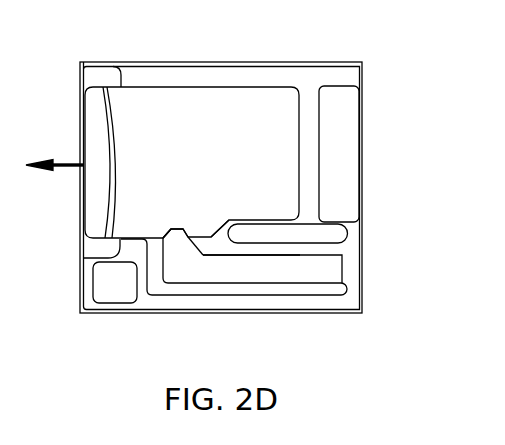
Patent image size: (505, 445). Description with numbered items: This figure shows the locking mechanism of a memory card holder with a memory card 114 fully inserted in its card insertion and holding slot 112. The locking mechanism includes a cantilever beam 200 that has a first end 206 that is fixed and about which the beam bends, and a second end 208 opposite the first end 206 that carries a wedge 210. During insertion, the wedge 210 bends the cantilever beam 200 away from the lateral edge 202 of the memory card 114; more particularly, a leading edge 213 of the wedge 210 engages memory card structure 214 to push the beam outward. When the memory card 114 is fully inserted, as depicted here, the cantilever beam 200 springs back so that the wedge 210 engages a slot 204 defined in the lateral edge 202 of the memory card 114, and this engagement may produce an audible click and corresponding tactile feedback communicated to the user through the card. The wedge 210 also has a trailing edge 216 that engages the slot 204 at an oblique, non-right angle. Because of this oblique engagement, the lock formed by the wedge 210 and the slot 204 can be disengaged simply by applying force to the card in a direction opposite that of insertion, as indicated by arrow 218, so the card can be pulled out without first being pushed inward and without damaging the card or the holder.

The card insertion and holding slot 112 is at (88, 81).
The memory card 114 is at (223, 103).
The cantilever beam 200 is at (270, 273).
The lateral edge 202 is at (231, 256).
The slot 204 is at (170, 230).
The first end 206 is at (380, 262).
The second end 208 is at (184, 278).
The wedge 210 is at (180, 239).
The leading edge 213 is at (166, 233).
The memory card structure 214 is at (195, 244).
The trailing edge 216 is at (207, 240).
The arrow 218 is at (70, 161).